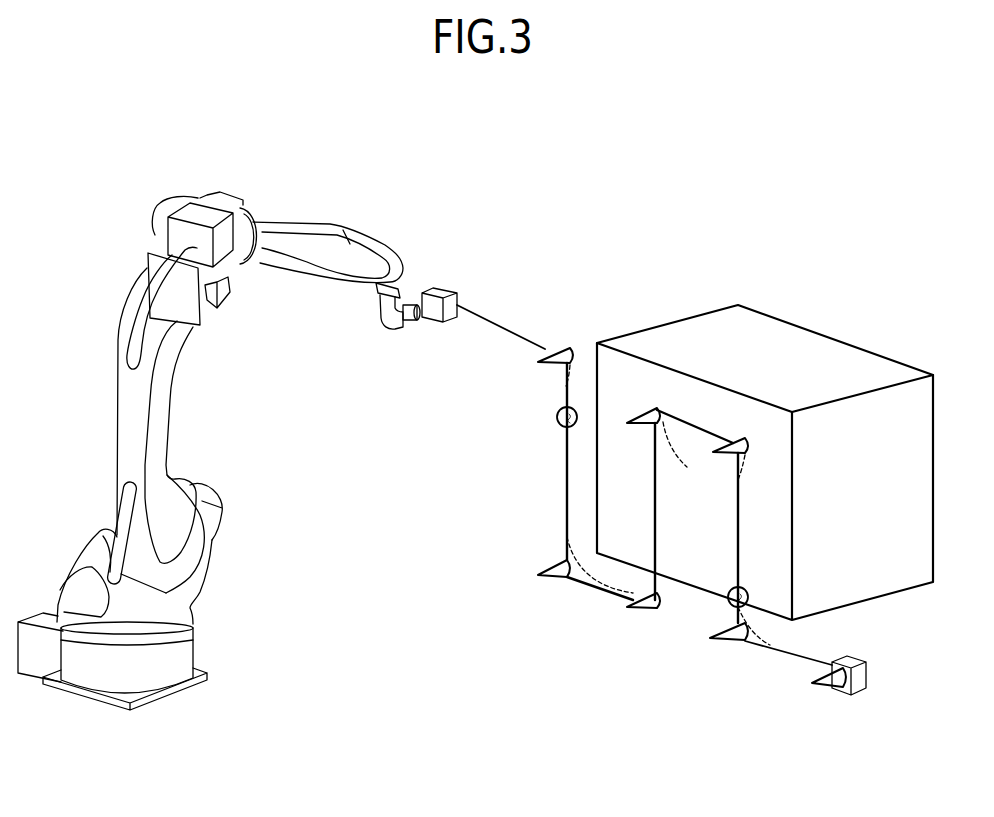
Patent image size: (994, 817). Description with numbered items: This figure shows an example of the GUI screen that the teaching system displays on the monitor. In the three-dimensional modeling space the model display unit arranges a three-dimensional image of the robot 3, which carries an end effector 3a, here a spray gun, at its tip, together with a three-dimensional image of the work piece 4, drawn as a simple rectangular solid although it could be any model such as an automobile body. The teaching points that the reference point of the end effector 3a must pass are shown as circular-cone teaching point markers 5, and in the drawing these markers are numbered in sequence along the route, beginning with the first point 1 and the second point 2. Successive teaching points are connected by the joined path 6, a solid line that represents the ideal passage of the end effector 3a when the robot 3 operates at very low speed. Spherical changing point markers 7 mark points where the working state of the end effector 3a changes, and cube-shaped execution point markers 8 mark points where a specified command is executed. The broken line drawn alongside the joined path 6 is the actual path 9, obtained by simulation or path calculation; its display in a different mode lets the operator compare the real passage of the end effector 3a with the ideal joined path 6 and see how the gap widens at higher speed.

The tool tip point 1 is at (414, 290).
The teaching point 2 is at (515, 345).
The robot 3 is at (77, 697).
The end effector 3a is at (383, 328).
The work piece 4 is at (843, 342).
The teaching point marker 5 is at (418, 313).
The joined path 6 is at (565, 485).
The changing point marker 7 is at (557, 416).
The execution point marker 8 is at (452, 292).
The actual path 9 is at (682, 458).